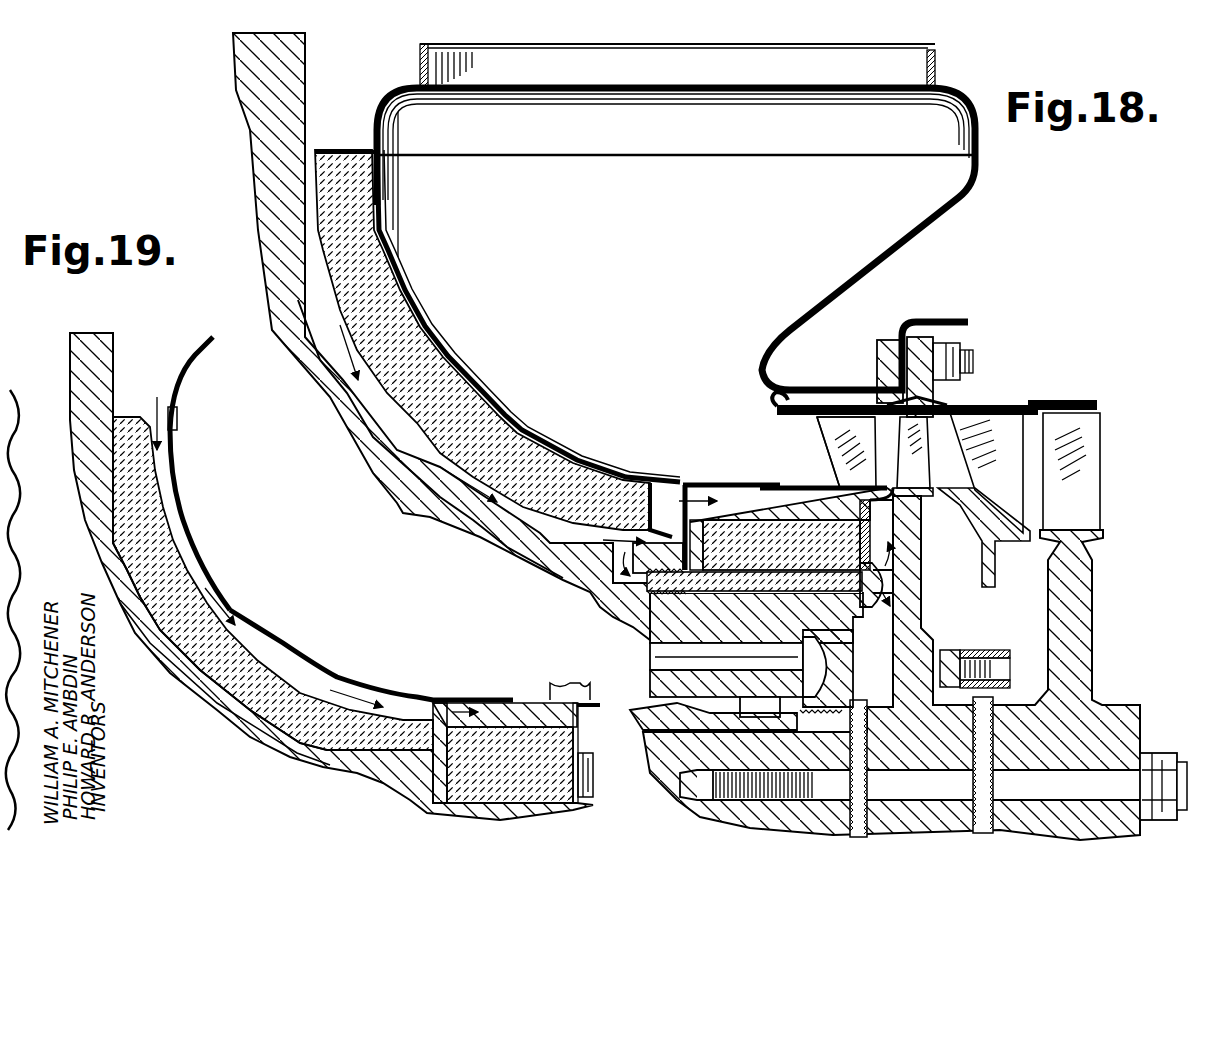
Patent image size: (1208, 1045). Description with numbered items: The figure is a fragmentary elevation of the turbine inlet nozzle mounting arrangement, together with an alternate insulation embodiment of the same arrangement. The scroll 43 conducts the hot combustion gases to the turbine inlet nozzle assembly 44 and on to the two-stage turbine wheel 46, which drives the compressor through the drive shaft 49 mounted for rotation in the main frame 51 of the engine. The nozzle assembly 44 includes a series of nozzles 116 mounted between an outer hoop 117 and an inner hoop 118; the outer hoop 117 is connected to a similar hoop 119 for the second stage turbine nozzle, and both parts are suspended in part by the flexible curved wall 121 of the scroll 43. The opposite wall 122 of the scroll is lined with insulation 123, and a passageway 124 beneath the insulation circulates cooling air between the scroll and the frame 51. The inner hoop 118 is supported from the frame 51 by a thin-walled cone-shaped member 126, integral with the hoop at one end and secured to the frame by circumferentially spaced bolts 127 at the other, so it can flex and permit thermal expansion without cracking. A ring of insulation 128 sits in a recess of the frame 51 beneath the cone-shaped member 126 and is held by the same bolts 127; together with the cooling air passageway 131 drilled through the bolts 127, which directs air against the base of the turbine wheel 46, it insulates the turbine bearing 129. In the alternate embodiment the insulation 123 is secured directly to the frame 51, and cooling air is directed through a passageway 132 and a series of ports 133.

In FIG. 18, the scroll 43 is at (592, 236).
In FIG. 18, the turbine inlet nozzle assembly 44 is at (795, 423).
In FIG. 18, the two-stage turbine wheel 46 is at (915, 548).
In FIG. 18, the drive shaft 49 is at (700, 810).
In FIG. 18, the main frame 51 is at (393, 493).
In FIG. 19, the main frame 51 is at (173, 675).
In FIG. 18, the nozzles 116 is at (827, 442).
In FIG. 18, the outer hoop 117 is at (842, 408).
In FIG. 18, the inner hoop 118 is at (838, 462).
In FIG. 18, the hoop for second stage turbine nozzle 119 is at (985, 407).
In FIG. 18, the flexible curved wall 121 is at (863, 263).
In FIG. 18, the opposite wall 122 is at (403, 287).
In FIG. 19, the opposite wall 122 is at (217, 577).
In FIG. 18, the insulation 123 is at (417, 313).
In FIG. 19, the insulation 123 is at (150, 470).
In FIG. 18, the passageway 124 is at (347, 390).
In FIG. 18, the cone-shaped member 126 is at (810, 483).
In FIG. 18, the bolts 127 is at (880, 565).
In FIG. 18, the ring of insulation 128 is at (858, 512).
In FIG. 18, the turbine bearing 129 is at (770, 698).
In FIG. 18, the cooling air passageway 131 is at (660, 583).
In FIG. 19, the passageway 132 is at (175, 528).
In FIG. 19, the ports 133 is at (460, 697).